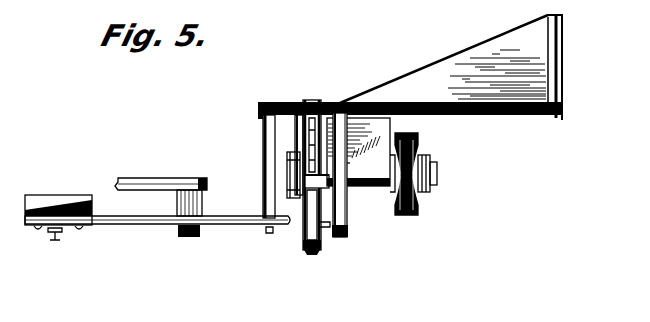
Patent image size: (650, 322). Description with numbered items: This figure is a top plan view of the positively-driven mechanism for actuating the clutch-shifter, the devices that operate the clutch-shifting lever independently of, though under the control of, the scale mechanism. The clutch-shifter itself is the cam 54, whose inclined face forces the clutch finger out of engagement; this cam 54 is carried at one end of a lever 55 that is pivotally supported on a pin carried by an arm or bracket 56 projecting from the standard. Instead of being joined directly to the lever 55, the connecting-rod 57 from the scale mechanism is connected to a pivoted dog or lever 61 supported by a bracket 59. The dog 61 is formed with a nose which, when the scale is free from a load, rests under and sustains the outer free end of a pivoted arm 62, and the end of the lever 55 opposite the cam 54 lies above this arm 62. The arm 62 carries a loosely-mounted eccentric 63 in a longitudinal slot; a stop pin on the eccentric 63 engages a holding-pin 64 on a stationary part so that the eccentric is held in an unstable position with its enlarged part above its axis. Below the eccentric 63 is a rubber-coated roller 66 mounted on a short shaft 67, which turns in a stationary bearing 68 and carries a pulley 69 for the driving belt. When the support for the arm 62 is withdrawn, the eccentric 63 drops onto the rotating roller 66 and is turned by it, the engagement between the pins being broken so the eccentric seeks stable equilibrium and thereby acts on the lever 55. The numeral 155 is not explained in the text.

The cam 54 is at (66, 205).
The lever 55 is at (160, 225).
The arm or bracket 56 is at (164, 177).
The rod 57 is at (313, 255).
The bracket 59 is at (348, 222).
The pivoted dog or lever 61 is at (304, 238).
The pivoted arm 62 is at (303, 203).
The eccentric 63 is at (324, 202).
The holding-pin 64 is at (300, 185).
The roller 66 is at (287, 163).
The short shaft 67 is at (437, 172).
The stationary bearing 68 is at (397, 163).
The pulley 69 is at (417, 205).
The post 155 is at (264, 177).